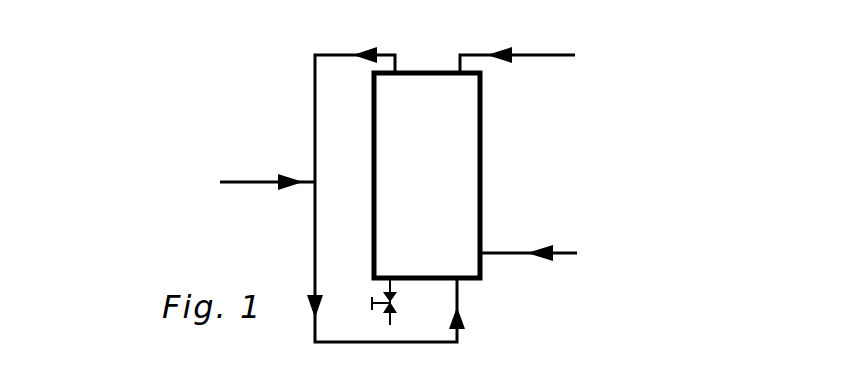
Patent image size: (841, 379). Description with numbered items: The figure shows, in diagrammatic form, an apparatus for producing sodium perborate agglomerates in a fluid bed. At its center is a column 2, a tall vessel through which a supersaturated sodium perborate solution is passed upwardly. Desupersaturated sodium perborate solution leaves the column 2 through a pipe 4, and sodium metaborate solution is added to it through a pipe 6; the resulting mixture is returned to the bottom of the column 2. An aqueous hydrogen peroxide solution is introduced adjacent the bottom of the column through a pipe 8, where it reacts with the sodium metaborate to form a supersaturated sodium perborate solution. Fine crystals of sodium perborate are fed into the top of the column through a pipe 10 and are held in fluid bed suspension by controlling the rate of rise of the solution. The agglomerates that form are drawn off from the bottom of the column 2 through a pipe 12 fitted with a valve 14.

The column 2 is at (484, 170).
The pipe 4 is at (345, 55).
The pipe 6 is at (257, 179).
The pipe 8 is at (511, 250).
The pipe 10 is at (540, 55).
The pipe 12 is at (393, 320).
The valve 14 is at (395, 300).